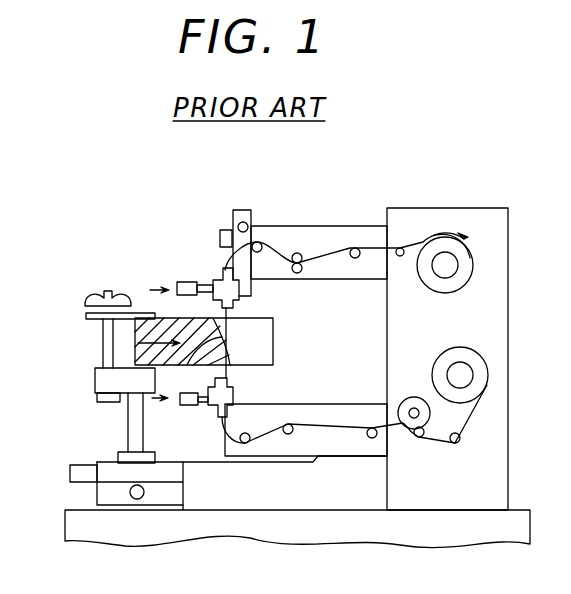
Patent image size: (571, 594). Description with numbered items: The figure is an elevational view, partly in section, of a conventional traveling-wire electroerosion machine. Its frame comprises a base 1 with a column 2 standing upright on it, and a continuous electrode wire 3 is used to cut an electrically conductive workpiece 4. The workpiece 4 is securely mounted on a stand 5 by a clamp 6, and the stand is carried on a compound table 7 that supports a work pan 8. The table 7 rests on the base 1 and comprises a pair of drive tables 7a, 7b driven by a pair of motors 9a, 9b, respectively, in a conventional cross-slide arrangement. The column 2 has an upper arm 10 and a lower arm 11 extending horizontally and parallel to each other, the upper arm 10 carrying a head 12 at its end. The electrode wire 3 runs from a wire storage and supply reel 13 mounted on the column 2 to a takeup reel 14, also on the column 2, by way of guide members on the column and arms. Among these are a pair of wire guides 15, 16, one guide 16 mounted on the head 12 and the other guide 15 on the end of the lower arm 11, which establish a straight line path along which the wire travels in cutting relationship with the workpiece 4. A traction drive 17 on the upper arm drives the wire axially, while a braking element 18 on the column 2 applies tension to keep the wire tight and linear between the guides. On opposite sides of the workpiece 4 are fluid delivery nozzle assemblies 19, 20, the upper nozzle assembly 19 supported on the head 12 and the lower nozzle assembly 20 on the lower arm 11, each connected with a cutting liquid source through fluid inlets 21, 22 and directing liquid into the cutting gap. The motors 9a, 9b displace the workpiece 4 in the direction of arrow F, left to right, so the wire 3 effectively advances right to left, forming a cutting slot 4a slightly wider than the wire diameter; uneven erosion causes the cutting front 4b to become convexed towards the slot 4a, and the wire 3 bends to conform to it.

The base 1 is at (250, 537).
The column 2 is at (508, 318).
The electrode wire 3 is at (421, 243).
The workpiece 4 is at (172, 320).
The cutting slot 4a is at (258, 328).
The cutting front 4b is at (173, 381).
The direction of displacement arrow F is at (180, 348).
The stand 5 is at (95, 378).
The clamp 6 is at (85, 305).
The compound table 7 is at (167, 505).
The drive table 7a is at (97, 492).
The drive table 7b is at (183, 477).
The work pan 8 is at (317, 462).
The motor 9a is at (131, 497).
The motor 9b is at (70, 470).
The upper arm 10 is at (283, 233).
The lower arm 11 is at (340, 413).
The head 12 is at (235, 213).
The wire storage and supply reel 13 is at (483, 380).
The takeup reel 14 is at (470, 260).
The wire guide 15 is at (223, 422).
The wire guide 16 is at (223, 267).
The traction drive 17 is at (308, 250).
The braking element 18 is at (403, 427).
The upper nozzle assembly 19 is at (240, 290).
The lower nozzle assembly 20 is at (233, 395).
The fluid inlet 21 is at (178, 282).
The fluid inlet 22 is at (182, 405).